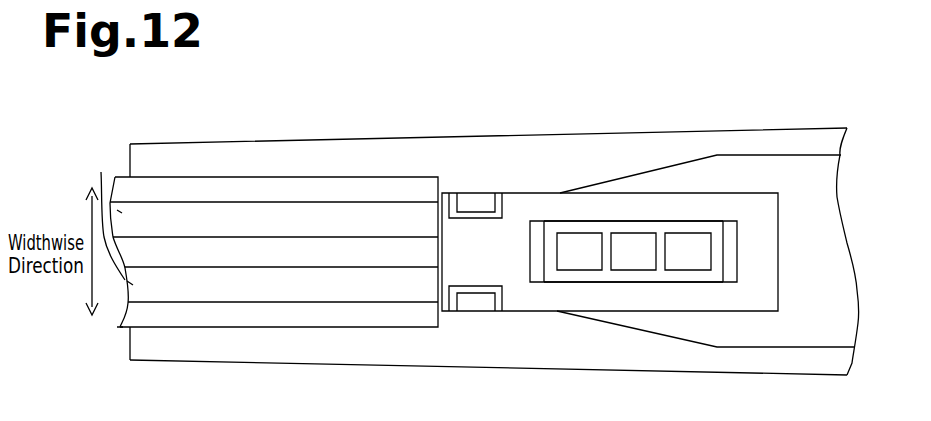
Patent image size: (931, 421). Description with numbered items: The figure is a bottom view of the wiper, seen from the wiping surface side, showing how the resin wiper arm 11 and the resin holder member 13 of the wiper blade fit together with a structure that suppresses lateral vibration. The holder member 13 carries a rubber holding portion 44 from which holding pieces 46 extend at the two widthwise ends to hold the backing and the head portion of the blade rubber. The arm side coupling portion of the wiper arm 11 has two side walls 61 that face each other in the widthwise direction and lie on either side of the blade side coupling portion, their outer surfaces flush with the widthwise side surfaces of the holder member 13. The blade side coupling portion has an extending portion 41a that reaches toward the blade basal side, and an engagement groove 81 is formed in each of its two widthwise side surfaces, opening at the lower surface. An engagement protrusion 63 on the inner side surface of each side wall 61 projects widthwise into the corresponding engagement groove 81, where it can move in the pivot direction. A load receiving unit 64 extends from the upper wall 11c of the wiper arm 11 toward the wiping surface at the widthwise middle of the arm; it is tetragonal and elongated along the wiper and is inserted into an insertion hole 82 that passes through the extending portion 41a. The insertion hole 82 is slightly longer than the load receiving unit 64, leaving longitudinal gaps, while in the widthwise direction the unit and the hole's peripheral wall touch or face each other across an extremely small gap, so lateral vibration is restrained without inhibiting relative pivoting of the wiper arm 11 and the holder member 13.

The wiper arm 11 is at (768, 128).
The upper wall 11c is at (810, 178).
The holder member 13 is at (174, 177).
The extending portion 41a is at (537, 312).
The rubber holding portion 44 is at (178, 327).
The holding piece 46 is at (101, 172).
The side wall 61 is at (367, 140).
The engagement protrusion 63 is at (468, 201).
The load receiving unit 64 is at (633, 282).
The engagement groove 81 is at (500, 200).
The insertion hole 82 is at (738, 247).